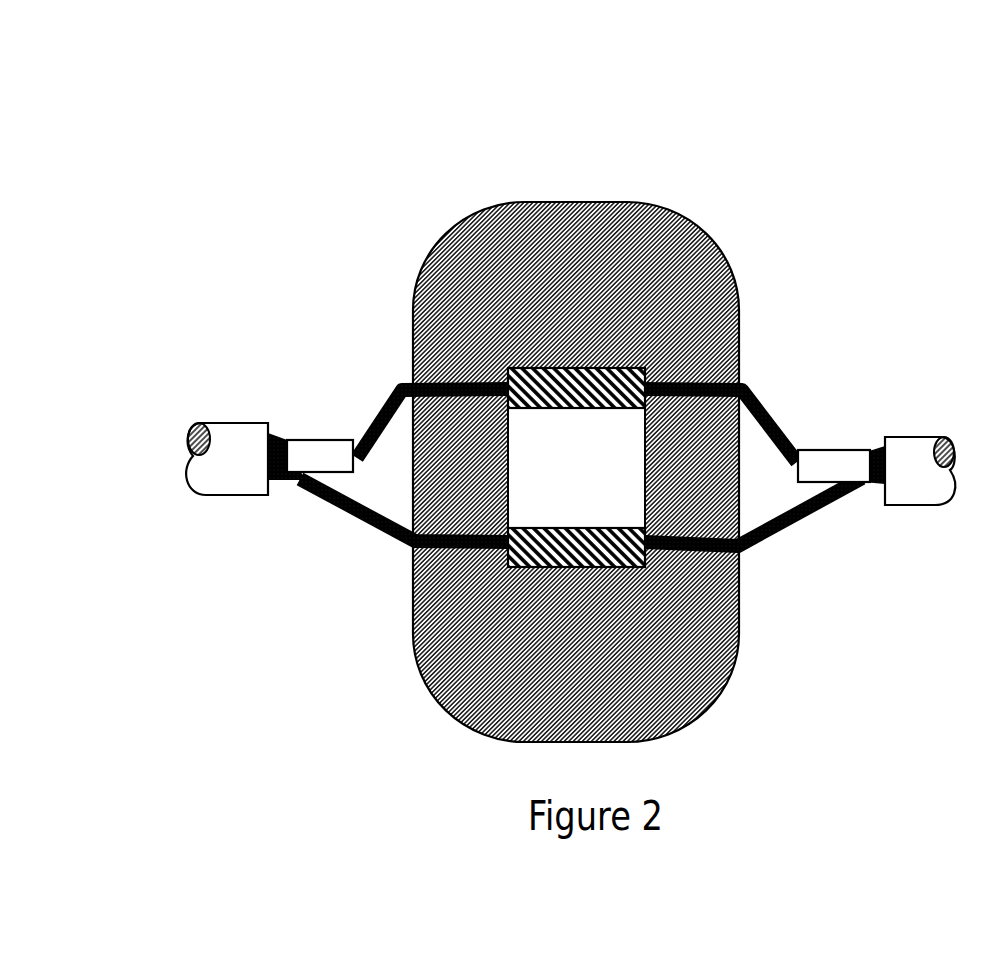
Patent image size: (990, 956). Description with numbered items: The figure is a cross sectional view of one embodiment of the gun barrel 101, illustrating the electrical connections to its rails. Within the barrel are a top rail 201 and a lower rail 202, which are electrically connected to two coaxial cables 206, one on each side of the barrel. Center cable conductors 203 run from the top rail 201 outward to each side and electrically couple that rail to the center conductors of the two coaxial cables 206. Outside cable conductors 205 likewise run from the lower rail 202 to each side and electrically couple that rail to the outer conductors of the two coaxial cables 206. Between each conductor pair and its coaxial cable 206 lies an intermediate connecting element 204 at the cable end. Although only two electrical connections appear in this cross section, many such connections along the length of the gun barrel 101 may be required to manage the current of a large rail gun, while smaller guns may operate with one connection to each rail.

The gun barrel 101 is at (600, 250).
The top rail 201 is at (533, 372).
The lower rail 202 is at (552, 570).
The center cable conductor 203 is at (367, 418).
The connector block 204 is at (327, 455).
The outside cable conductor 205 is at (345, 512).
The coaxial cable 206 is at (233, 477).